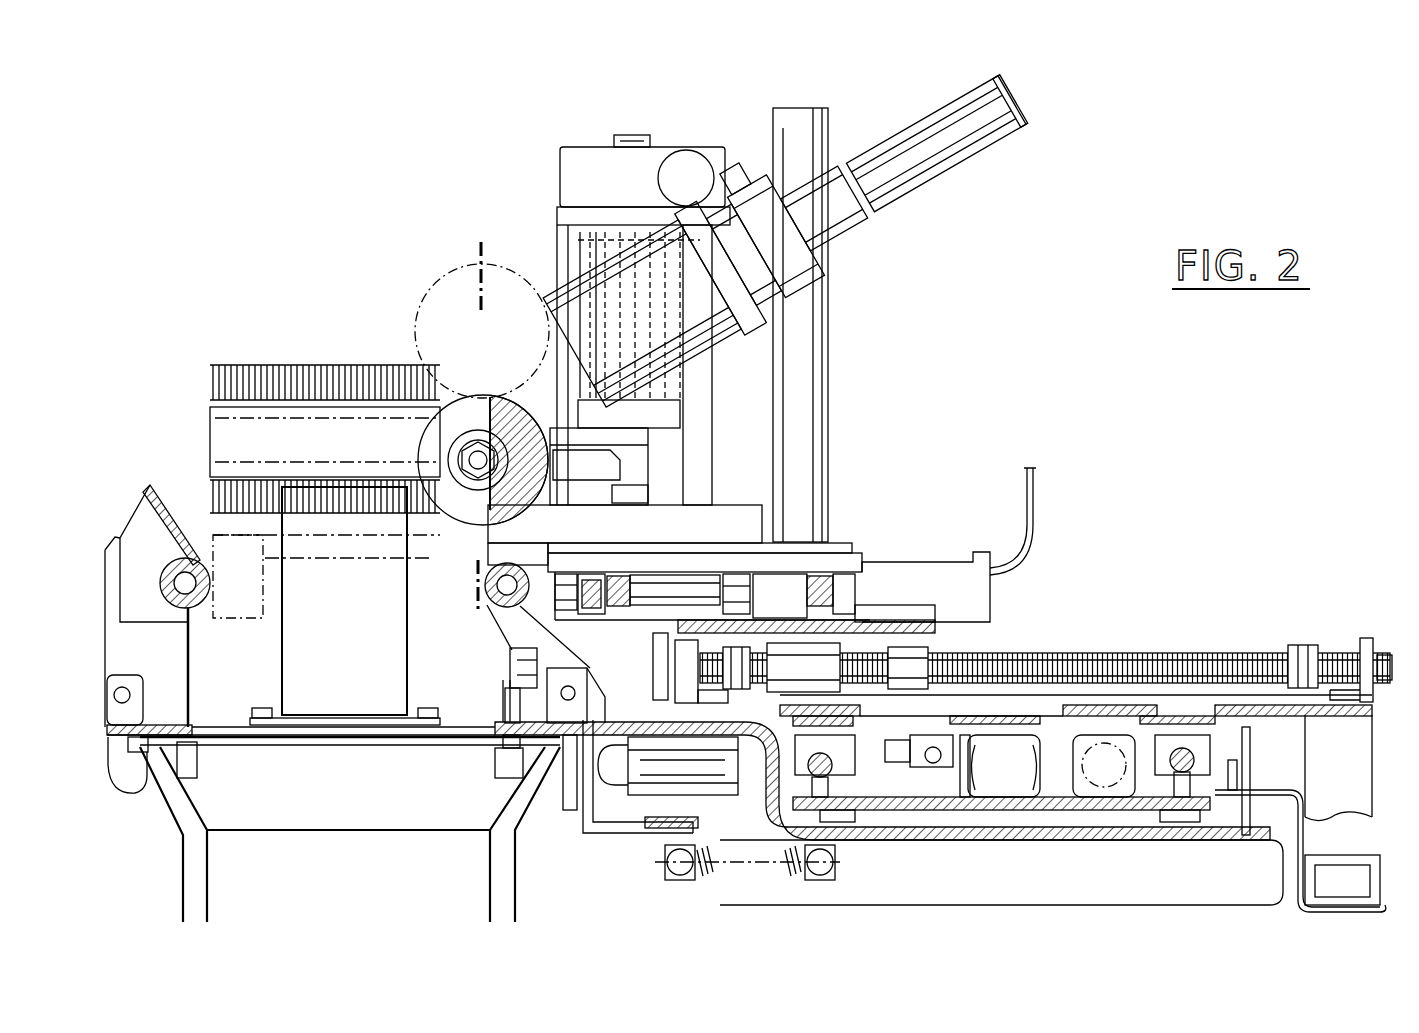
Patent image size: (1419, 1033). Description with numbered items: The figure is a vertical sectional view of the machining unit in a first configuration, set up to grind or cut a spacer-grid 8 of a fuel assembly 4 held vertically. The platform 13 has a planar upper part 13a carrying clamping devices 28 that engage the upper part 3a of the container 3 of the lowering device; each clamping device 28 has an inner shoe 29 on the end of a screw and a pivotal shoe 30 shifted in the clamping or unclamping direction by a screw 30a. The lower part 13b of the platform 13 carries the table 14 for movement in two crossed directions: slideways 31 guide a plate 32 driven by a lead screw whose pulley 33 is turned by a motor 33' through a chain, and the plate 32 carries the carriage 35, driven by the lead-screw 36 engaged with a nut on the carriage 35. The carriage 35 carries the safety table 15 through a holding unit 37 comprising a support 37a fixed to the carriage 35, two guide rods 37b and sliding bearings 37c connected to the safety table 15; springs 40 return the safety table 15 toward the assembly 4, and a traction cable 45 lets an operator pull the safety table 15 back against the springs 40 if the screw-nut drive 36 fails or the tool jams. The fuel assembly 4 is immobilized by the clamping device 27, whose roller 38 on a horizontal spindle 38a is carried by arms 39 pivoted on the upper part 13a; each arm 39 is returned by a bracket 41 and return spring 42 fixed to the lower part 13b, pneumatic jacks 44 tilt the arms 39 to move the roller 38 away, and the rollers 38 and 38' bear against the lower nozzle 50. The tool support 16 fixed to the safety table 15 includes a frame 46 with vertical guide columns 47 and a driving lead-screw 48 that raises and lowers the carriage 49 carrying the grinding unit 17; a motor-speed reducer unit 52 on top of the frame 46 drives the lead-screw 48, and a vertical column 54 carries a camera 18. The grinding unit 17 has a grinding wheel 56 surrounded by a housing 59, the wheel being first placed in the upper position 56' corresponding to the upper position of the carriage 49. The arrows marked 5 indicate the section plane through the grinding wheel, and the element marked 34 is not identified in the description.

The container of the lowering device 3 is at (378, 878).
The upper part of the container 3a is at (510, 805).
The fuel assembly 4 is at (287, 362).
The section line 5- 5 is at (476, 245).
The spacer-grid 8 is at (225, 440).
The platform 13 is at (975, 906).
The planar upper part 13a is at (585, 832).
The lower part 13b is at (935, 845).
The table for movement in two crossed directions 14 is at (1258, 765).
The safety table 15 is at (846, 530).
The tool support 16 is at (693, 142).
The grinding unit 17 is at (540, 392).
The camera 18 is at (740, 305).
The clamping device of the fuel assembly 27 is at (540, 560).
The clamping devices 28 is at (152, 808).
The inner shoe 29 is at (498, 765).
The pivotal shoe 30 is at (575, 787).
The screw 30a is at (565, 676).
The slideways 31 is at (835, 768).
The plate 32 is at (1085, 708).
The pulley 33 is at (1000, 766).
The motor 33' is at (1104, 766).
The flange 34 is at (650, 660).
The carriage 35 is at (930, 618).
The lead-screw 36 is at (1135, 648).
The holding unit 37 is at (872, 588).
The support 37a is at (855, 605).
The guide rods 37b is at (795, 590).
The sliding bearings 37c is at (600, 590).
The roller 38 is at (491, 608).
The second roller 38' is at (212, 580).
The horizontal spindle 38a is at (512, 570).
The arms 39 is at (515, 640).
The springs 40 is at (640, 587).
The bracket 41 is at (640, 853).
The return spring 42 is at (745, 870).
The pneumatic jacks 44 is at (712, 788).
The traction cable 45 is at (1020, 490).
The frame 46 is at (695, 490).
The vertical guide columns 47 is at (597, 245).
The driving lead-screw 48 is at (690, 400).
The carriage 49 is at (670, 445).
The lower nozzle 50 is at (247, 625).
The motor-speed reducer unit 52 is at (560, 168).
The vertical column 54 is at (828, 135).
The grinding wheel 56 is at (461, 460).
The upper position of the grinding wheel 56' is at (482, 304).
The housing 59 is at (535, 471).